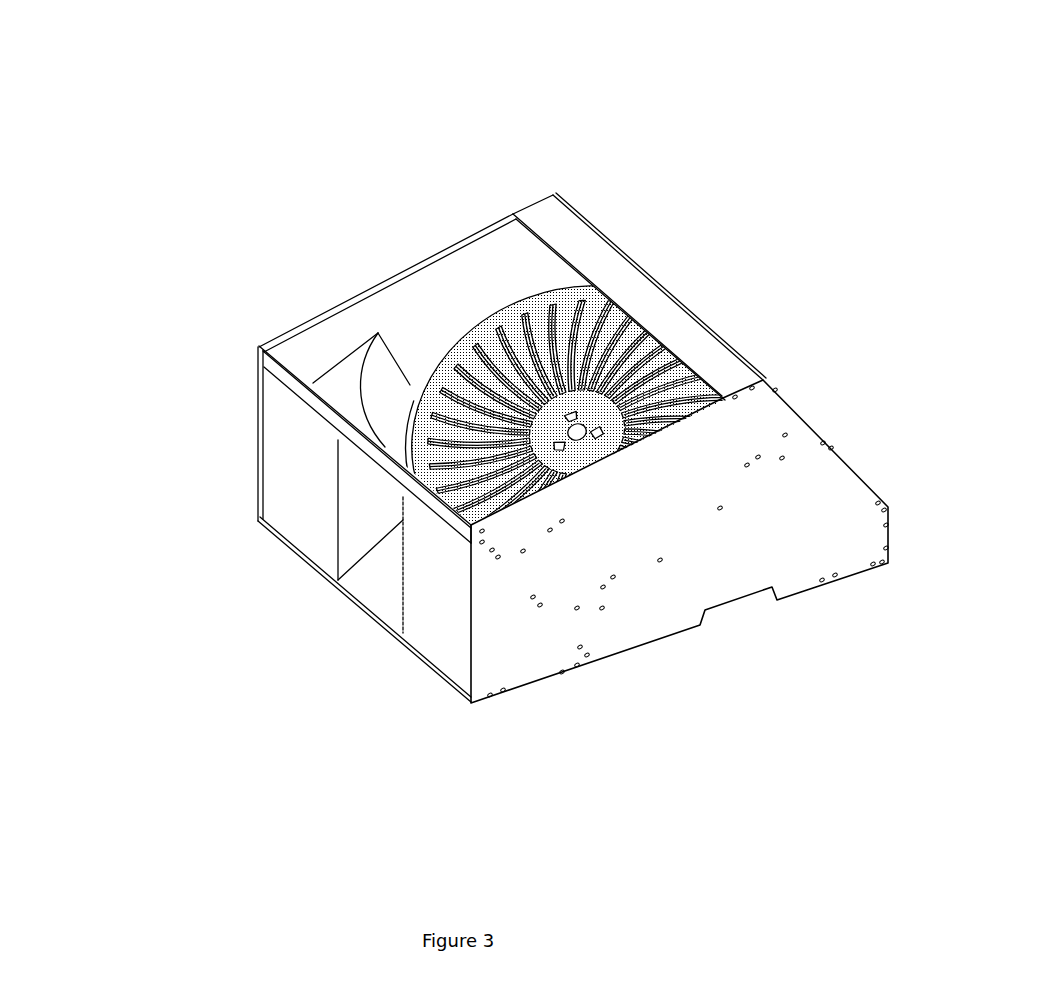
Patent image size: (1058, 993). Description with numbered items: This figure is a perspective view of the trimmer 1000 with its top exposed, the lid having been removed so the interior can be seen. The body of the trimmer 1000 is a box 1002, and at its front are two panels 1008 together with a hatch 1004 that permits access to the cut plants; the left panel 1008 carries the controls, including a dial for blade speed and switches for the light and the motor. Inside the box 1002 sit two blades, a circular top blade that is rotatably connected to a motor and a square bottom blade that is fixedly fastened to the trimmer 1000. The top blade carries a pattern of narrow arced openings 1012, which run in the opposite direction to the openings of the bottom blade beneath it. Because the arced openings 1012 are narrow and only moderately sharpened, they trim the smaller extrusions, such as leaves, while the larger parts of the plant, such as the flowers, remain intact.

The trimmer 1000 is at (421, 187).
The box 1002 is at (667, 573).
The hatch 1004 is at (330, 624).
The panel 1008 is at (280, 487).
The arced openings 1012 is at (582, 290).